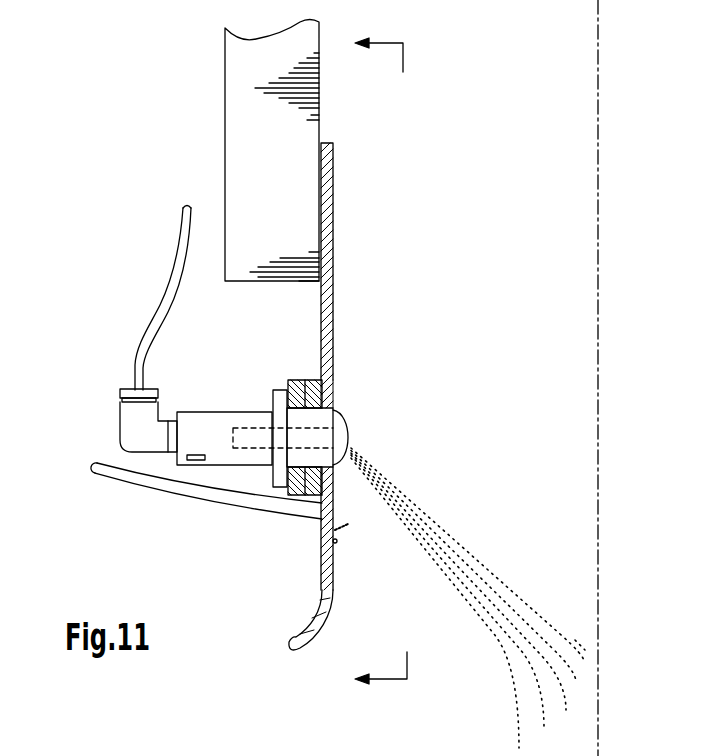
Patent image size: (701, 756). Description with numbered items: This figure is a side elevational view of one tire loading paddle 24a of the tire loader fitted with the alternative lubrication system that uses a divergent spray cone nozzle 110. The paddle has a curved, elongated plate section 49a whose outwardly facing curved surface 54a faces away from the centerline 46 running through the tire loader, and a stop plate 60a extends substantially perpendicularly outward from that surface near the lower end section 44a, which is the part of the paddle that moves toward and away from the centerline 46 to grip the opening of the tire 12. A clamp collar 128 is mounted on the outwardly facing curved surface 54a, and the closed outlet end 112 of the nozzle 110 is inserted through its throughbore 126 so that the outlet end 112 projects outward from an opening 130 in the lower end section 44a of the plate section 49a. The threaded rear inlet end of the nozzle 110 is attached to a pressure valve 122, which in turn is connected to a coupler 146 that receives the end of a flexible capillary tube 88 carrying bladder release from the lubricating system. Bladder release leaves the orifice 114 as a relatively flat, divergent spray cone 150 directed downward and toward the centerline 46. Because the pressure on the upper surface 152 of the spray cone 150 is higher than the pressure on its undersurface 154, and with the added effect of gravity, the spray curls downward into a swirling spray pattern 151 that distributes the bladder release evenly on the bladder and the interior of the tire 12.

The tire 12 is at (368, 363).
The tire loading paddle 24a is at (333, 145).
The lower end section 44a is at (336, 543).
The centerline 46 is at (600, 442).
The plate section 49a is at (333, 262).
The outwardly facing curved surface 54a is at (322, 317).
The stop plate 60a is at (108, 482).
The flexible capillary tube 88 is at (178, 240).
The nozzle 110 is at (300, 438).
The closed outlet end 112 is at (358, 421).
The orifice 114 is at (347, 448).
The pressure valve 122 is at (207, 458).
The throughbore 126 is at (306, 480).
The clamp collar 128 is at (290, 380).
The opening 130 is at (337, 394).
The coupler 146 is at (137, 420).
The spray cone 150 is at (437, 535).
The spray pattern 151 is at (570, 599).
The upper surface 152 is at (500, 570).
The undersurface 154 is at (438, 560).